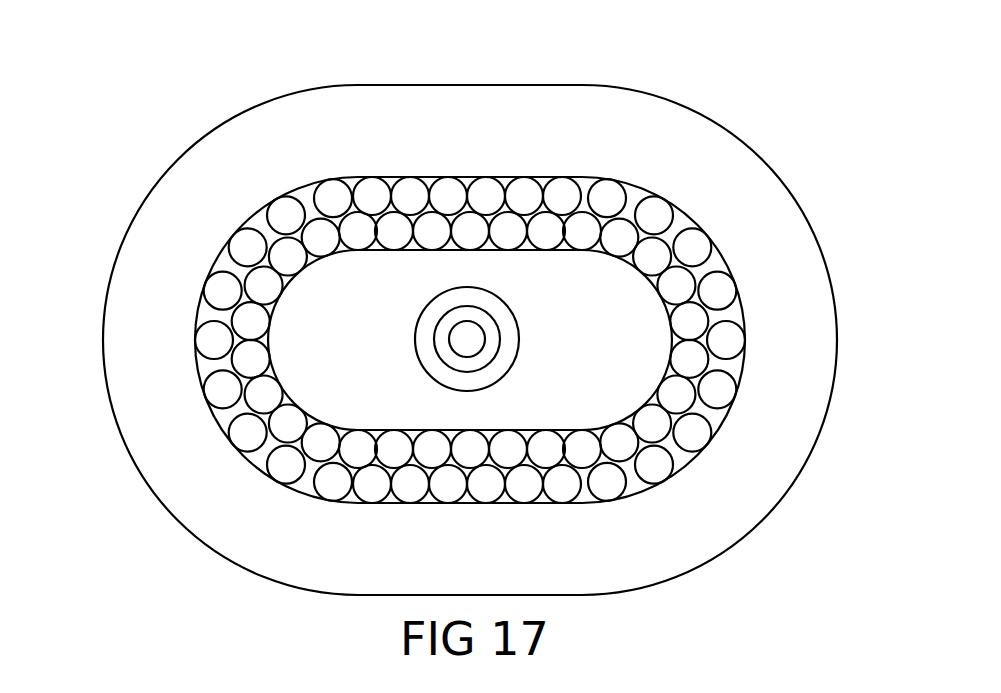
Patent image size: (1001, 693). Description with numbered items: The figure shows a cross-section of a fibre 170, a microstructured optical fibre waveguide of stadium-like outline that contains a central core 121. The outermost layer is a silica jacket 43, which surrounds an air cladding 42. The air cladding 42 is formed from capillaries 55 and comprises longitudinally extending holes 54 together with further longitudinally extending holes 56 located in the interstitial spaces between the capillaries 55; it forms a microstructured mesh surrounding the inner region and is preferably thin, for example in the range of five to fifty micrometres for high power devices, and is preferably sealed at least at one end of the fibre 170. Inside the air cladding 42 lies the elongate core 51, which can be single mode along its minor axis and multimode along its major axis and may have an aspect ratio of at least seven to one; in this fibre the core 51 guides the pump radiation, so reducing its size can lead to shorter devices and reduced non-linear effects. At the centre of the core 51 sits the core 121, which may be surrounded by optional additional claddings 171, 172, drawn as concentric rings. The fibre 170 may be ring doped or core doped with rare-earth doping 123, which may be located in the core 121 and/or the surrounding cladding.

The fibre 170 is at (470, 315).
The silica jacket 43 is at (805, 337).
The air cladding 42 is at (708, 272).
The core 51 is at (325, 288).
The longitudinally extending holes 54 is at (562, 192).
The capillaries 55 is at (642, 482).
The longitudinally extending holes 56 is at (207, 362).
The additional cladding 172 is at (508, 367).
The additional cladding 171 is at (502, 337).
The core 121 is at (482, 326).
The rare-earth doping 123 is at (462, 340).